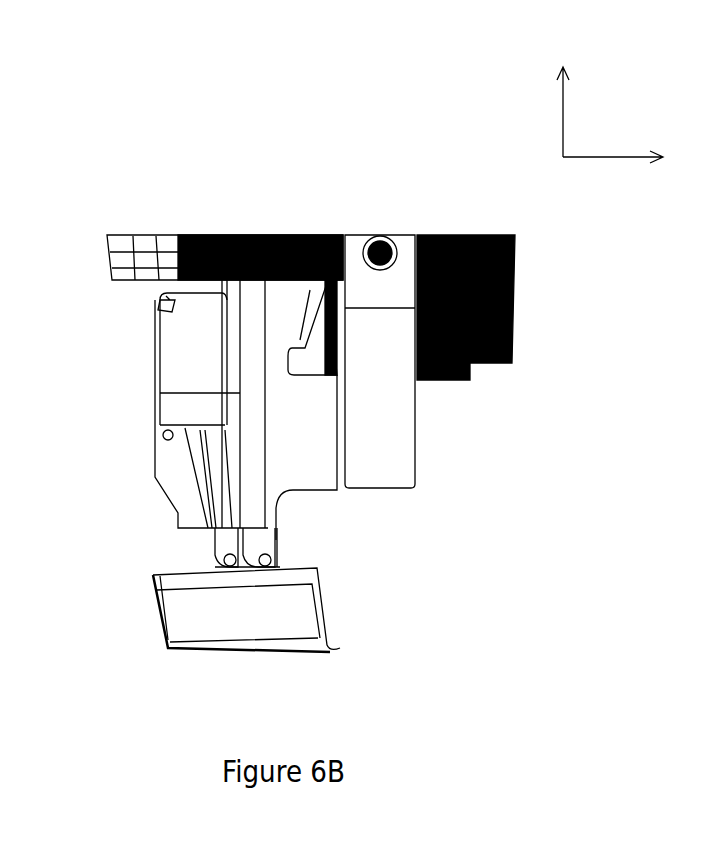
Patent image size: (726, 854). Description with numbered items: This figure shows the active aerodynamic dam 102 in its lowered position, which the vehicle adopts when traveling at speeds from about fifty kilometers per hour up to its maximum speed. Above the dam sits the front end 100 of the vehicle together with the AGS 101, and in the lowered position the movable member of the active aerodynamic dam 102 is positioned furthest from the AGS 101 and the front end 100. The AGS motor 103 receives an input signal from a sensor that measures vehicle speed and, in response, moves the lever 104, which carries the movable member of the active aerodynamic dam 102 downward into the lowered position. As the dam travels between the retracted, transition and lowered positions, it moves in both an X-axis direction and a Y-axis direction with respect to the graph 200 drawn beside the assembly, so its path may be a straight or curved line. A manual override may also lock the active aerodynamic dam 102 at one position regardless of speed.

The front end 100 is at (283, 240).
The AGS 101 is at (277, 322).
The active aerodynamic dam 102 is at (295, 597).
The AGS motor 103 is at (185, 342).
The lever 104 is at (263, 542).
The graph 200 is at (625, 115).